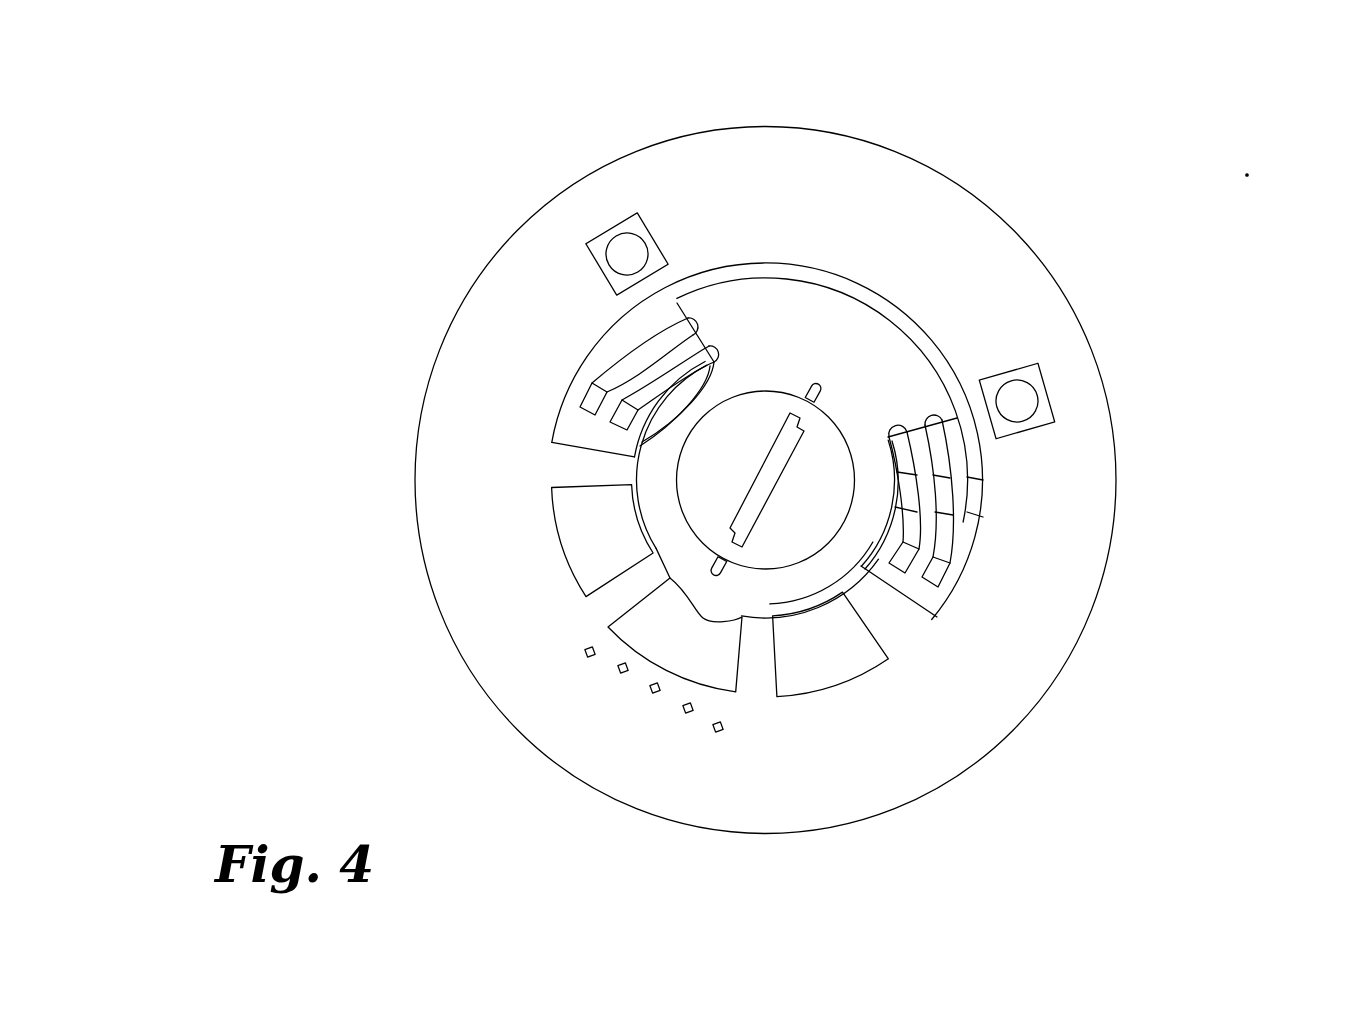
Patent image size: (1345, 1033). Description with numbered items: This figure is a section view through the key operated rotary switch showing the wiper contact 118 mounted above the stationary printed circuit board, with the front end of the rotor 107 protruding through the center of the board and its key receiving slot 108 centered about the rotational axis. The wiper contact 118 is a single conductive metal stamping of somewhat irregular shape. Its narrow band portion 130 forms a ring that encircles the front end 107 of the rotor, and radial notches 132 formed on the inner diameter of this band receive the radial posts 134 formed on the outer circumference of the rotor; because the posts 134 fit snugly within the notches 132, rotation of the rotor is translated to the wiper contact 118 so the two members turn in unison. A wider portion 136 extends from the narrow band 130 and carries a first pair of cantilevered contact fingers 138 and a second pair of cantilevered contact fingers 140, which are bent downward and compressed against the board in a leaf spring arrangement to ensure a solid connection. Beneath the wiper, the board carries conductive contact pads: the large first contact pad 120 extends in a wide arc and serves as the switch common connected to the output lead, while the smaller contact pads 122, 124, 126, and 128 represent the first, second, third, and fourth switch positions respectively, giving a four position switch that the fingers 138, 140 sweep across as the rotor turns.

The transverse front end of the rotor 107 is at (723, 448).
The key receiving slot 108 is at (777, 443).
The wiper contact 118 is at (860, 305).
The first contact pad 120 is at (575, 433).
The first switch position contact pad 122 is at (913, 603).
The second switch position contact pad 124 is at (825, 653).
The third switch position contact pad 126 is at (718, 657).
The fourth switch position contact pad 128 is at (592, 545).
The narrow band portion 130 is at (845, 558).
The radial notches 132 is at (818, 385).
The radial posts 134 is at (822, 400).
The wider portion 136 is at (795, 322).
The first pair of cantilevered contact fingers 138 is at (635, 395).
The second pair of cantilevered contact fingers 140 is at (943, 537).